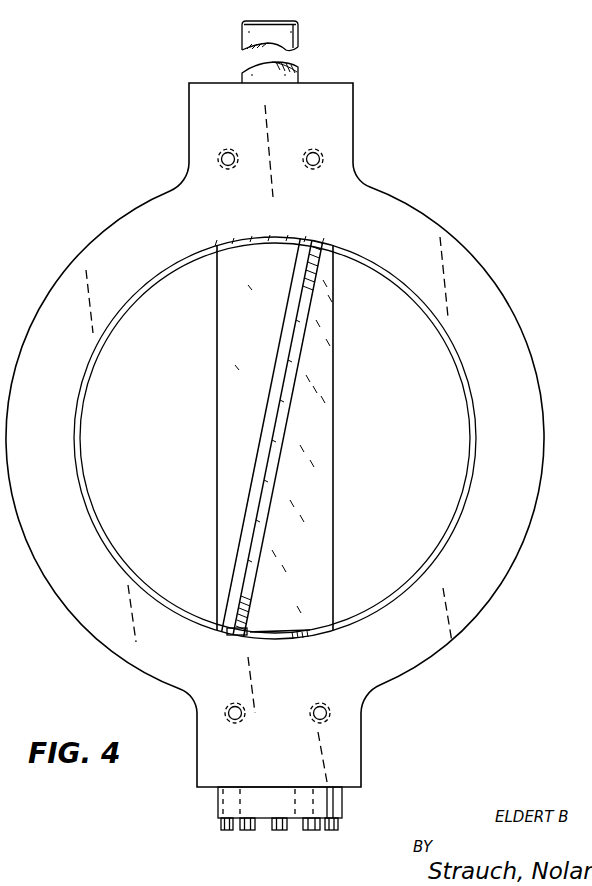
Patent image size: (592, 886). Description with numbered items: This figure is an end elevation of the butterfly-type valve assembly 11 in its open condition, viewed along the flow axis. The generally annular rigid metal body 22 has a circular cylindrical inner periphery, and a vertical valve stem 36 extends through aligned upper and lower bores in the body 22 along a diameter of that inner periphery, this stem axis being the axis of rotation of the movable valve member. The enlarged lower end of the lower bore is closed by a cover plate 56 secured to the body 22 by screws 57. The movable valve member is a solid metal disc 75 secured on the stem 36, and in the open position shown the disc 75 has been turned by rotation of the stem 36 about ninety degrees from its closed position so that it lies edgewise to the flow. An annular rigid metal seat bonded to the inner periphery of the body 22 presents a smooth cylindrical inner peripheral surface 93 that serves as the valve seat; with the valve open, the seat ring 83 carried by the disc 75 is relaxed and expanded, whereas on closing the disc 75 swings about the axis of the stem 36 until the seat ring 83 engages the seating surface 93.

The butterfly-type valve assembly 11 is at (421, 223).
The valve body 22 is at (494, 328).
The valve stem 36 is at (300, 80).
The cover plate 56 is at (342, 807).
The screws 57 is at (283, 845).
The disc 75 is at (306, 433).
The seat ring 83 is at (297, 339).
The inner peripheral surface 93 is at (471, 402).